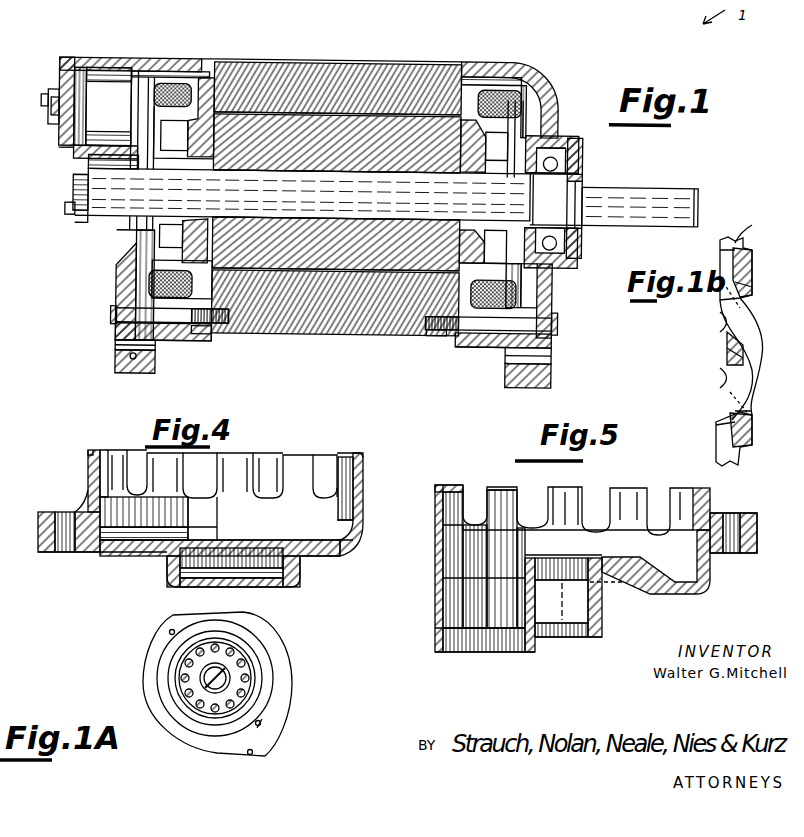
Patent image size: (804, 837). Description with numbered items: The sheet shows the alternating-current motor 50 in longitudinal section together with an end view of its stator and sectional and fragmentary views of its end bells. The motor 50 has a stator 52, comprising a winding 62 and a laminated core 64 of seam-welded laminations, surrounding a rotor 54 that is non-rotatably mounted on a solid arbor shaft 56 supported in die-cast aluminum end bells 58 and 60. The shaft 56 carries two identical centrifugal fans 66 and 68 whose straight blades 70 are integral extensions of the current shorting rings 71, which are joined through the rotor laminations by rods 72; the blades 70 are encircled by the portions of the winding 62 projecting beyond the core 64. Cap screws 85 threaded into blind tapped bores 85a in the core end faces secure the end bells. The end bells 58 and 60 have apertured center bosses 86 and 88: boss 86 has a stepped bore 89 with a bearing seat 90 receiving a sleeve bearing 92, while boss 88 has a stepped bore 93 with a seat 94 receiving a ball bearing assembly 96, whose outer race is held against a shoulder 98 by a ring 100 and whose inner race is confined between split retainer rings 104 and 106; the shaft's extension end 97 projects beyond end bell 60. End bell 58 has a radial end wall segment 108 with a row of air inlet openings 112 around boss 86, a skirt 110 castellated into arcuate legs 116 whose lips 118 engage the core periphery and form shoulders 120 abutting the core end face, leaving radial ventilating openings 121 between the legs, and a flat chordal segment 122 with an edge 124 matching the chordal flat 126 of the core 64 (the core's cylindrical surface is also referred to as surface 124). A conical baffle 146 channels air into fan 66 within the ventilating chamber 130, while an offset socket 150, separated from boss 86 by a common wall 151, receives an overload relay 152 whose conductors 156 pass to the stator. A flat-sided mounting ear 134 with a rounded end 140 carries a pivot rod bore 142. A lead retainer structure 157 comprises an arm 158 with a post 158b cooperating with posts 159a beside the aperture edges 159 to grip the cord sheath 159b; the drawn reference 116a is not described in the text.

In FIG. 1, the motor 50 is at (560, 68).
In FIG. 1, the stator 52 is at (268, 60).
In FIG. 1, the rotor 54 is at (316, 171).
In FIG. 1A, the rotor 54 is at (207, 705).
In FIG. 1, the arbor shaft 56 is at (263, 180).
In FIG. 1A, the arbor shaft 56 is at (213, 688).
In FIG. 1, the end bell 58 is at (148, 60).
In FIG. 1B, the end bell 58 is at (742, 263).
In FIG. 5, the end bell 58 is at (700, 599).
In FIG. 1, the end bell 60 is at (549, 115).
In FIG. 4, the end bell 60 is at (350, 540).
In FIG. 1, the winding 62 is at (190, 85).
In FIG. 1A, the winding 62 is at (255, 640).
In FIG. 1, the laminated core 64 is at (354, 63).
In FIG. 1A, the laminated core 64 is at (277, 661).
In FIG. 1, the centrifugal air ventilating fan 66 is at (175, 145).
In FIG. 1, the centrifugal air ventilating fan 68 is at (480, 160).
In FIG. 1, the blades 70 is at (558, 294).
In FIG. 1, the current shorting rings 71 is at (197, 229).
In FIG. 1, the rods 72 is at (212, 226).
In FIG. 1A, the rods 72 is at (187, 661).
In FIG. 1, the cap screws 85 is at (112, 318).
In FIG. 1A, the cap screws 85 is at (171, 629).
In FIG. 1, the blind tapped bores 85a is at (197, 336).
In FIG. 1, the center boss 86 is at (78, 225).
In FIG. 5, the center boss 86 is at (602, 633).
In FIG. 1, the center boss 88 is at (565, 140).
In FIG. 4, the center boss 88 is at (300, 583).
In FIG. 1, the stepped shaft bore 89 is at (68, 207).
In FIG. 1, the bearing seat 90 is at (68, 184).
In FIG. 1, the sleeve bearing 92 is at (82, 228).
In FIG. 1, the stepped shaft bore 93 is at (584, 208).
In FIG. 1, the bearing seat 94 is at (548, 264).
In FIG. 1, the ball bearing assembly 96 is at (582, 168).
In FIG. 1, the extension end 97 is at (676, 198).
In FIG. 1, the shoulder 98 is at (582, 148).
In FIG. 1, the ring 100 is at (546, 135).
In FIG. 1, the split retainer ring 104 is at (578, 250).
In FIG. 1, the split retainer ring 106 is at (507, 168).
In FIG. 1, the end wall segment 108 is at (117, 297).
In FIG. 1B, the end wall segment 108 is at (752, 445).
In FIG. 4, the end wall segment 108 is at (136, 556).
In FIG. 5, the end wall segment 108 is at (656, 575).
In FIG. 4, the skirt 110 is at (90, 502).
In FIG. 5, the skirt 110 is at (437, 575).
In FIG. 1, the air ventilating openings 112 is at (118, 246).
In FIG. 5, the air ventilating openings 112 is at (623, 590).
In FIG. 1, the arcuate legs 116 is at (183, 342).
In FIG. 4, the arcuate legs 116 is at (119, 458).
In FIG. 5, the arcuate legs 116 is at (518, 503).
In FIG. 5, the finger 116a is at (575, 520).
In FIG. 1, the lips 118 is at (213, 343).
In FIG. 4, the lips 118 is at (96, 455).
In FIG. 5, the lips 118 is at (507, 482).
In FIG. 1, the shoulders 120 is at (220, 335).
In FIG. 4, the shoulders 120 is at (252, 456).
In FIG. 5, the shoulders 120 is at (512, 490).
In FIG. 4, the air ventilating openings 121 is at (135, 468).
In FIG. 5, the air ventilating openings 121 is at (466, 533).
In FIG. 1, the chordal segment 122 is at (175, 73).
In FIG. 1A, the edge 124 is at (150, 649).
In FIG. 1A, the chordal flat 126 is at (232, 613).
In FIG. 1, the air ventilating chamber 130 is at (136, 283).
In FIG. 5, the air ventilating chamber 130 is at (463, 475).
In FIG. 1, the motor mounting ear 134 is at (115, 370).
In FIG. 4, the motor mounting ear 134 is at (38, 552).
In FIG. 5, the motor mounting ear 134 is at (751, 553).
In FIG. 1A, the rounded outer end portion 140 is at (256, 758).
In FIG. 1, the pivot rod mounting bore 142 is at (134, 364).
In FIG. 4, the pivot rod mounting bore 142 is at (63, 553).
In FIG. 5, the pivot rod mounting bore 142 is at (742, 512).
In FIG. 1A, the pivot rod mounting bore 142 is at (267, 755).
In FIG. 1, the inlet air baffle 146 is at (117, 258).
In FIG. 5, the inlet air baffle 146 is at (530, 568).
In FIG. 1, the annular socket 150 is at (58, 150).
In FIG. 5, the annular socket 150 is at (440, 638).
In FIG. 1, the common wall portion 151 is at (100, 148).
In FIG. 5, the common wall portion 151 is at (557, 607).
In FIG. 1, the overload relay 152 is at (47, 113).
In FIG. 1, the electrical conductors 156 is at (153, 97).
In FIG. 1B, the electrical motor lead guide retainer structure 157 is at (709, 353).
In FIG. 1B, the arm 158 is at (722, 335).
In FIG. 1B, the post 158b is at (725, 350).
In FIG. 1B, the edges 159 is at (752, 289).
In FIG. 1B, the posts 159a is at (722, 251).
In FIG. 1B, the electrical cord sheath 159b is at (726, 240).